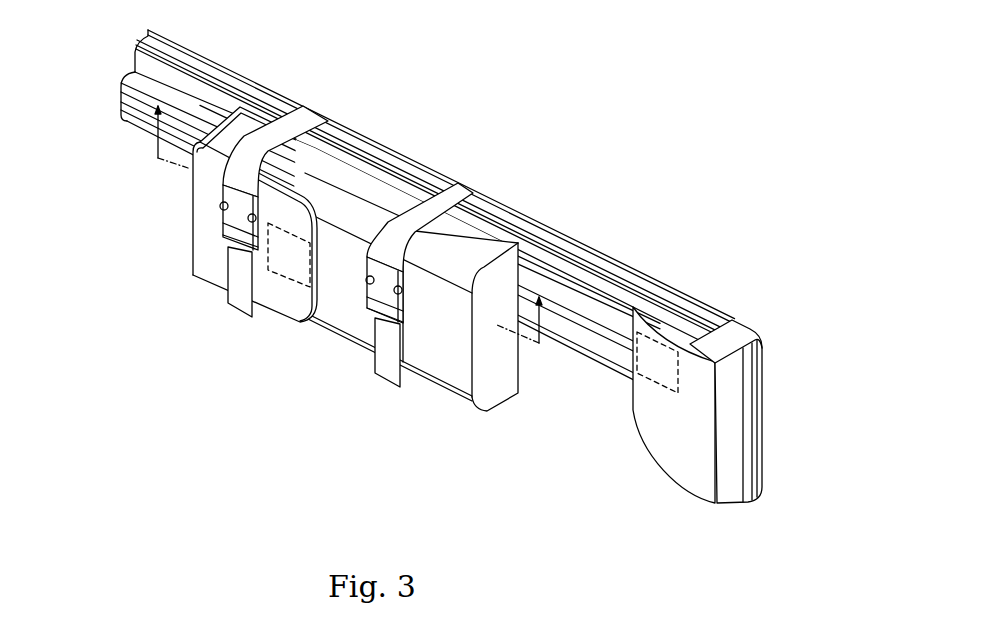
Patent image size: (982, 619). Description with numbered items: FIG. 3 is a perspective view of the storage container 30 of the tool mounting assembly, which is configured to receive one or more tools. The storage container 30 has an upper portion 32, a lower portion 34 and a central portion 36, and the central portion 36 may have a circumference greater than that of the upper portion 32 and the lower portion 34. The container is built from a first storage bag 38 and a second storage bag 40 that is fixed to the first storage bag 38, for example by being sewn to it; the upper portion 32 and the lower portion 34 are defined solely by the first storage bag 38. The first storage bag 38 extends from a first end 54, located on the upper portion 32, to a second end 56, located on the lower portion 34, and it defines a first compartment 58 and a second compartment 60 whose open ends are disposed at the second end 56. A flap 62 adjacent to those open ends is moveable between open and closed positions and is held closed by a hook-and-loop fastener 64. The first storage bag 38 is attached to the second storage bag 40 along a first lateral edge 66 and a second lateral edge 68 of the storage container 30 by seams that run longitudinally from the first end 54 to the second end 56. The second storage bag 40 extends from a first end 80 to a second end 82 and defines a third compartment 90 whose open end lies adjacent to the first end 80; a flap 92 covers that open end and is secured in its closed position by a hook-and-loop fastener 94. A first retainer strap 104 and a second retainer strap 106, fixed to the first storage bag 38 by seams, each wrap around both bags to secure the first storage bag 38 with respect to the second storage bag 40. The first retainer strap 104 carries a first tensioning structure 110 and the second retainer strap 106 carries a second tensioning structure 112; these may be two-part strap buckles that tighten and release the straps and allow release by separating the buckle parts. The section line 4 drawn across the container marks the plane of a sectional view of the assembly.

The section line 4- 4 is at (346, 213).
The storage container 30 is at (449, 273).
The upper portion 32 is at (405, 221).
The lower portion 34 is at (593, 362).
The central portion 36 is at (381, 318).
The first storage bag 38 is at (705, 382).
The second storage bag 40 is at (447, 407).
The first end 54 is at (411, 166).
The second end 56 is at (762, 424).
The first compartment 58 is at (222, 88).
The second compartment 60 is at (387, 257).
The flap 62 is at (651, 426).
The hook-and-loop fastener 64 is at (653, 380).
The first lateral edge 66 is at (397, 148).
The second lateral edge 68 is at (518, 395).
The first end 80 is at (240, 213).
The second end 82 is at (456, 324).
The third compartment 90 is at (447, 258).
The flap 92 is at (210, 270).
The hook-and-loop fastener 94 is at (287, 277).
The first retainer strap 104 is at (317, 118).
The second retainer strap 106 is at (460, 183).
The first tensioning structure 110 is at (210, 185).
The second tensioning structure 112 is at (401, 310).